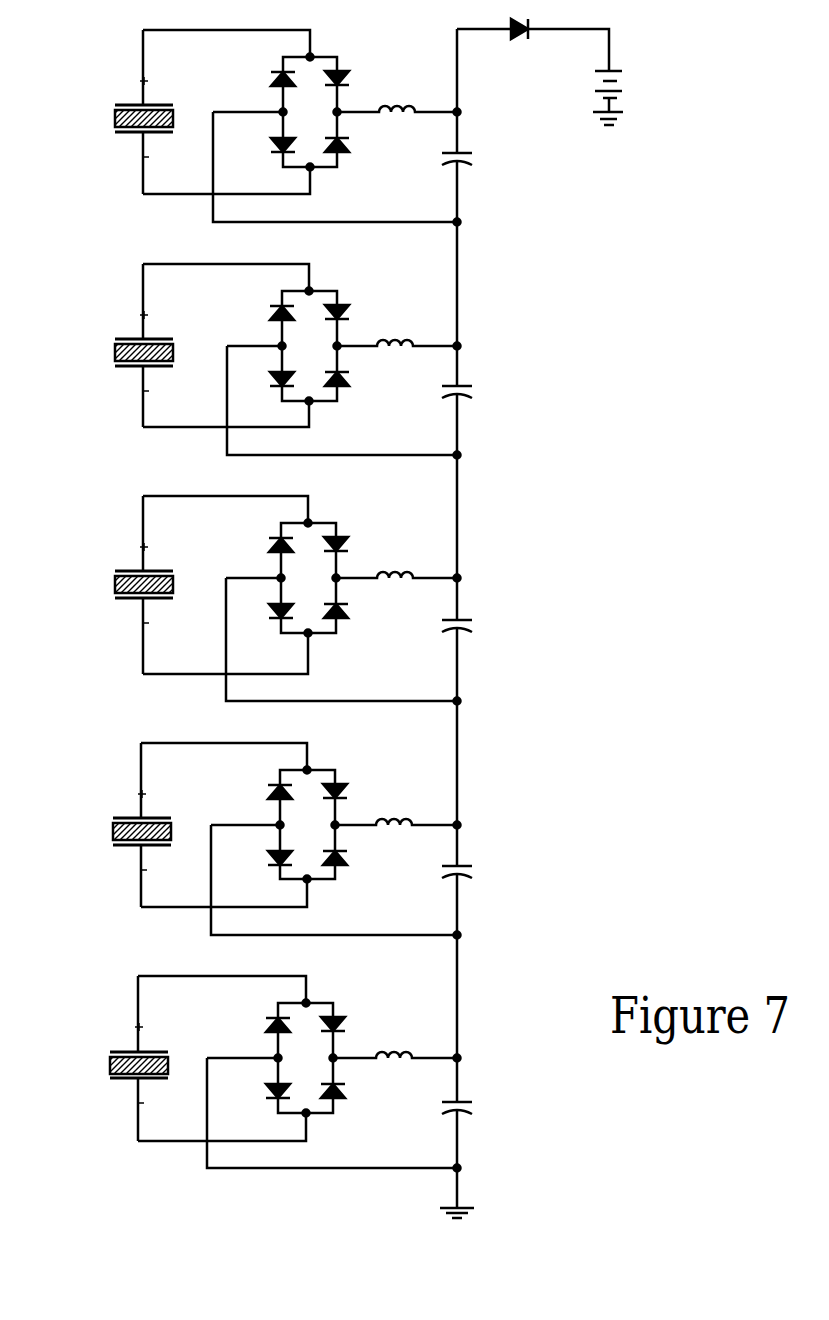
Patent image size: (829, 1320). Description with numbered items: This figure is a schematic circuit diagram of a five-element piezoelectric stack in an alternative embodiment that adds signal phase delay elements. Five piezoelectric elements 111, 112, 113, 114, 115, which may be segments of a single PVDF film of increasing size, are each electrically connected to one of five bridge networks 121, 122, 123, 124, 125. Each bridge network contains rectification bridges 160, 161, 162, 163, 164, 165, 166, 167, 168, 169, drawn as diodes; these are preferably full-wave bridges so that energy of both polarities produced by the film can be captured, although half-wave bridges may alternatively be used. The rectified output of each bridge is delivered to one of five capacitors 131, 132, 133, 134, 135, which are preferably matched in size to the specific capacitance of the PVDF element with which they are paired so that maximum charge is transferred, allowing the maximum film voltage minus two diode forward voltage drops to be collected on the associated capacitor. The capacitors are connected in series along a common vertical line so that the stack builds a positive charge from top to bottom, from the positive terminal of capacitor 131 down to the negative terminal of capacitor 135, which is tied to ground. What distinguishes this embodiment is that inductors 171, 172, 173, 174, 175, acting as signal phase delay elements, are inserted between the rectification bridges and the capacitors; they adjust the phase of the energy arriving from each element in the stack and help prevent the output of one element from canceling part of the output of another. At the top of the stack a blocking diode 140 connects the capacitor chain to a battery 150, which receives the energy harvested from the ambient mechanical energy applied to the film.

The piezoelectric element 111 is at (109, 112).
The piezoelectric element 112 is at (109, 345).
The piezoelectric element 113 is at (109, 585).
The piezoelectric element 114 is at (108, 825).
The piezoelectric element 115 is at (106, 1058).
The bridge network 121 is at (299, 104).
The bridge network 122 is at (299, 341).
The bridge network 123 is at (299, 571).
The bridge network 124 is at (298, 813).
The bridge network 125 is at (295, 1049).
The capacitor 131 is at (481, 158).
The capacitor 132 is at (481, 388).
The capacitor 133 is at (481, 619).
The capacitor 134 is at (481, 870).
The capacitor 135 is at (481, 1103).
The blocking diode 140 is at (520, 48).
The battery 150 is at (639, 95).
The rectification bridge 160 is at (252, 77).
The rectification bridge 161 is at (266, 154).
The rectification bridge 162 is at (252, 320).
The rectification bridge 163 is at (265, 393).
The rectification bridge 164 is at (251, 549).
The rectification bridge 165 is at (265, 624).
The rectification bridge 166 is at (250, 792).
The rectification bridge 167 is at (263, 868).
The rectification bridge 168 is at (247, 1022).
The rectification bridge 169 is at (261, 1100).
The inductor 171 is at (397, 123).
The inductor 172 is at (397, 357).
The inductor 173 is at (396, 589).
The inductor 174 is at (396, 837).
The inductor 175 is at (395, 1070).